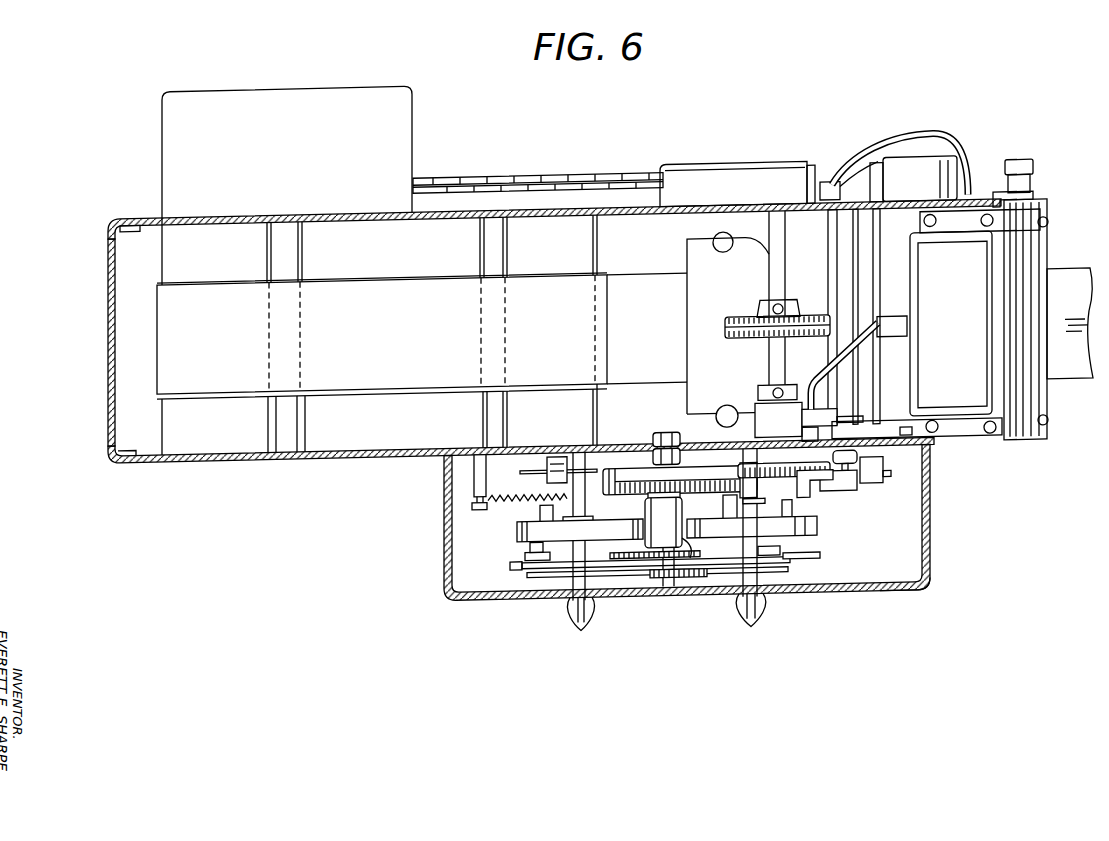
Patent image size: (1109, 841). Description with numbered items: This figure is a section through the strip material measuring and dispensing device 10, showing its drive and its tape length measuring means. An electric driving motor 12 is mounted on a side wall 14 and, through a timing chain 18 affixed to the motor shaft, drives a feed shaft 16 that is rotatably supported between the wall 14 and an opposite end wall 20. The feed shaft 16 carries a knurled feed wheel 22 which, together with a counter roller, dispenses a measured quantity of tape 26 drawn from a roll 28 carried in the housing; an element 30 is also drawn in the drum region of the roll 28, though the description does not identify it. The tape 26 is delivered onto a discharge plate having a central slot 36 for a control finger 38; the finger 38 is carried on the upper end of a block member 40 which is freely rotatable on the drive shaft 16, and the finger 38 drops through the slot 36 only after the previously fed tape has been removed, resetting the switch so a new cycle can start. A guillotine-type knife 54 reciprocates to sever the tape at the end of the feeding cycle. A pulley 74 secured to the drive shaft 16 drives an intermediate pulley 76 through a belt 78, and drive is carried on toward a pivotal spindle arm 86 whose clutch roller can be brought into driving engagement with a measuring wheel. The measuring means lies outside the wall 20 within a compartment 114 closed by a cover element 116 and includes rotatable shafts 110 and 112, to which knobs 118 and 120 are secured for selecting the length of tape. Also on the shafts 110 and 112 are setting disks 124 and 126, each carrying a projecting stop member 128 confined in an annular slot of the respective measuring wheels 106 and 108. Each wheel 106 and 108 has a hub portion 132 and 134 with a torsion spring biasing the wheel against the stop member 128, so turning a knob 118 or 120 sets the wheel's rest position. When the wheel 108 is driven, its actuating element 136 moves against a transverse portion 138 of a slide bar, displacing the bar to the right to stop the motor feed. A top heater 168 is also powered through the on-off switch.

The strip material measuring and dispensing device 10 is at (70, 201).
The electric driving motor 12 is at (212, 80).
The side wall 14 is at (123, 206).
The feed shaft 16 is at (767, 236).
The timing chain 18 is at (631, 174).
The end wall 20 is at (236, 447).
The feed wheel 22 is at (745, 344).
The tape 26 is at (462, 340).
The roll 28 is at (345, 385).
The upper drum flange 30 is at (304, 250).
The central slot 36 is at (908, 333).
The control finger 38 is at (877, 355).
The block member 40 is at (773, 421).
The guillotine-type knife 54 is at (856, 278).
The pulley 74 is at (784, 483).
The intermediate pulley 76 is at (701, 465).
The belt 78 is at (636, 473).
The spindle arm 86 is at (697, 550).
The measuring wheel 106 is at (820, 533).
The measuring wheel 108 is at (513, 533).
The rotatable shaft 110 is at (737, 510).
The rotatable shaft 112 is at (586, 507).
The compartment 114 is at (918, 559).
The cover element 116 is at (891, 596).
The knob 118 is at (596, 616).
The knob 120 is at (765, 619).
The setting disk 124 is at (821, 560).
The setting disk 126 is at (519, 563).
The stop member 128 is at (524, 554).
The hub portion 132 is at (745, 527).
The hub portion 134 is at (571, 526).
The actuating element 136 is at (537, 515).
The transverse portion 138 is at (567, 496).
The top heater 168 is at (975, 403).